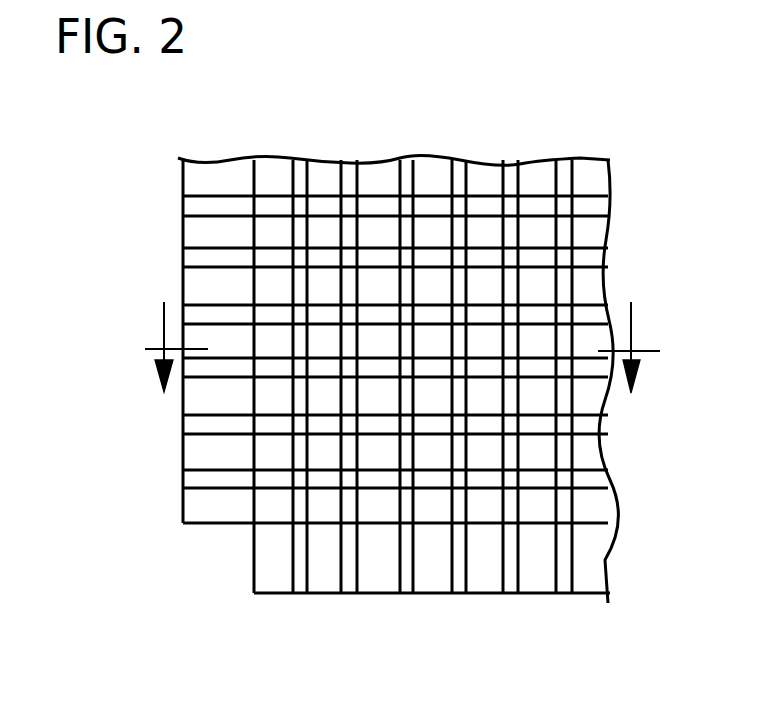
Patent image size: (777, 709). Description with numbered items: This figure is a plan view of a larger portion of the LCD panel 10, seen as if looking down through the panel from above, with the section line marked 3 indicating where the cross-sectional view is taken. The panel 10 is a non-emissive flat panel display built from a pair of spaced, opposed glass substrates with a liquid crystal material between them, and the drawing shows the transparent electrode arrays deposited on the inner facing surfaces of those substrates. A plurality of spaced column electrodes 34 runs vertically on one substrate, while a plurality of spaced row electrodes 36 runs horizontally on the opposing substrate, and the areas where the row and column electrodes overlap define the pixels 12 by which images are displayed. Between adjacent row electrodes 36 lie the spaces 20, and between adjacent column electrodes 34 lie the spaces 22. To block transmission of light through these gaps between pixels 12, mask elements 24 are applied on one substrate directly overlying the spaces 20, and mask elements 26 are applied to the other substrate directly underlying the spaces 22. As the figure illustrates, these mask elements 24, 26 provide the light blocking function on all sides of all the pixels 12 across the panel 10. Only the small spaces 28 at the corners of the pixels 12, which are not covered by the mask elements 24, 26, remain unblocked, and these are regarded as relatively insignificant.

The LCD panel 10 is at (154, 138).
The pixels 12 is at (535, 287).
The spaces between row electrodes 20 is at (193, 423).
The spaces between column electrodes 22 is at (300, 580).
The mask elements 24 is at (541, 478).
The mask elements 26 is at (407, 232).
The small spaces 28 is at (508, 258).
The column electrodes 34 is at (480, 580).
The row electrodes 36 is at (198, 232).
The section line 3- 3 is at (400, 347).